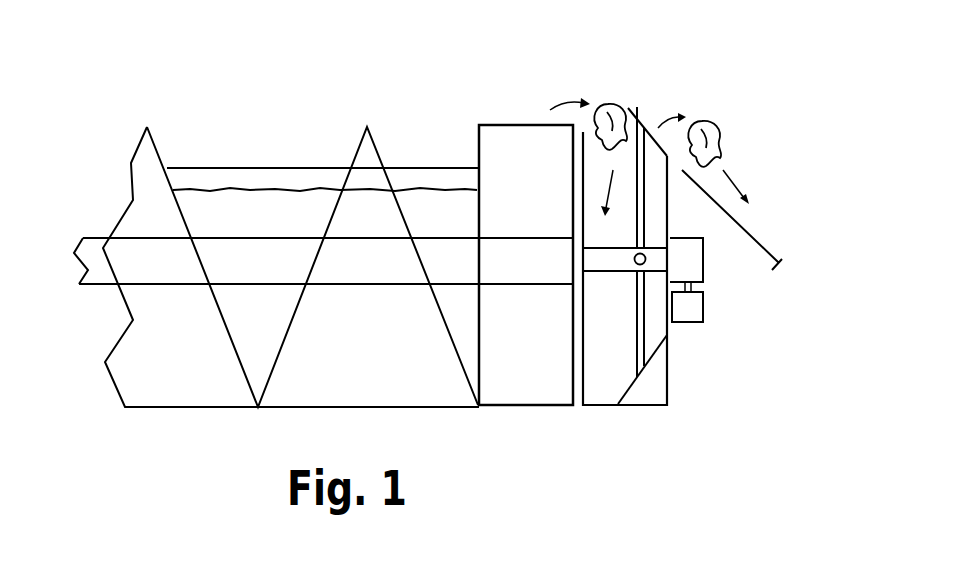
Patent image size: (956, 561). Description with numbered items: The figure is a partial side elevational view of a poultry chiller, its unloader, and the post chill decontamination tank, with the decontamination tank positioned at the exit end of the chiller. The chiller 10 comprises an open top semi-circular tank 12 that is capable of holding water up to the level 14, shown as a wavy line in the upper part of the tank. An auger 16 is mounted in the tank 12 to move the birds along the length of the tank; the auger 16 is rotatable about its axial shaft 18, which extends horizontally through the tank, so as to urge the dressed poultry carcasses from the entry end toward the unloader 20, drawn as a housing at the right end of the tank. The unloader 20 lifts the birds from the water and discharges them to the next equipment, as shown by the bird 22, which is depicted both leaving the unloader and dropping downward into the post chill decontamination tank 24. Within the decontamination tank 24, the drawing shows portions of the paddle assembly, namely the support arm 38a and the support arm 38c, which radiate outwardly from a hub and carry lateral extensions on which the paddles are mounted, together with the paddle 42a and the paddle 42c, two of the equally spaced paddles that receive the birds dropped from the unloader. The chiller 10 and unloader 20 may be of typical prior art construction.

The chiller 10 is at (88, 180).
The tank 12 is at (218, 168).
The level 14 is at (298, 190).
The auger 16 is at (270, 372).
The axial shaft 18 is at (273, 247).
The unloader 20 is at (537, 125).
The bird 22 is at (607, 116).
The post chill decontamination tank 24 is at (636, 406).
The support arm 38a is at (640, 212).
The support arm 38c is at (640, 330).
The paddle 42a is at (632, 108).
The paddle 42c is at (660, 350).